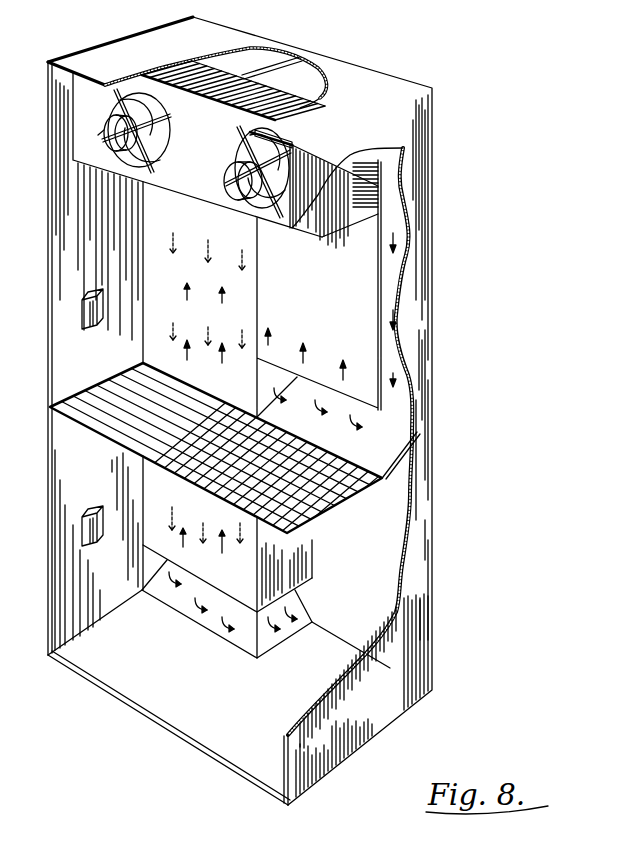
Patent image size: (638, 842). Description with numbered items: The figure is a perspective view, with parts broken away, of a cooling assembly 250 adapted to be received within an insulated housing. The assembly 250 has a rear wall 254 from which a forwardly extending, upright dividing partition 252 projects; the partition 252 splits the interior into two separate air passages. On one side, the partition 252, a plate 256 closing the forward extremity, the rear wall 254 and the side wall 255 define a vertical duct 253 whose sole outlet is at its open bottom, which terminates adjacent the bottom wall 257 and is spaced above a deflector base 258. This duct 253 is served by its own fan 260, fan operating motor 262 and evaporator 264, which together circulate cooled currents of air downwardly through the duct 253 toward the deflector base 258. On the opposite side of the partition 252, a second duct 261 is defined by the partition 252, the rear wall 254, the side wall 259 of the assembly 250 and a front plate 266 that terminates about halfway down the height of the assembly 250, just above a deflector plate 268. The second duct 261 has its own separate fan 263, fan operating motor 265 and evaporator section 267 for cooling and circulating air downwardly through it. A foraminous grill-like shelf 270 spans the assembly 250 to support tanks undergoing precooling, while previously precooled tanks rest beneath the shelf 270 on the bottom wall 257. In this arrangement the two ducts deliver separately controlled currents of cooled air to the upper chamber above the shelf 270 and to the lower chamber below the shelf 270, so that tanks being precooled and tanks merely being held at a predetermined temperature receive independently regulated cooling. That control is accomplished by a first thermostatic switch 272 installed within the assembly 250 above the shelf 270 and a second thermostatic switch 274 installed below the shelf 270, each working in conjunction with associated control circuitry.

The assembly 250 is at (436, 128).
The dividing partition 252 is at (292, 70).
The vertical duct 253 is at (273, 55).
The rear wall 254 is at (402, 183).
The side wall 255 is at (60, 262).
The plate 256 is at (155, 235).
The bottom wall 257 is at (113, 676).
The deflector base 258 is at (200, 617).
The side wall 259 is at (426, 340).
The fan 260 is at (153, 137).
The second duct 261 is at (322, 74).
The fan operating motor 262 is at (107, 133).
The fan 263 is at (260, 148).
The evaporator 264 is at (228, 68).
The fan operating motor 265 is at (230, 180).
The front plate 266 is at (362, 393).
The evaporator section 267 is at (300, 93).
The deflector plate 268 is at (388, 465).
The foraminous grill-like shelf 270 is at (63, 400).
The first thermostatic switch 272 is at (88, 314).
The second thermostatic switch 274 is at (94, 506).